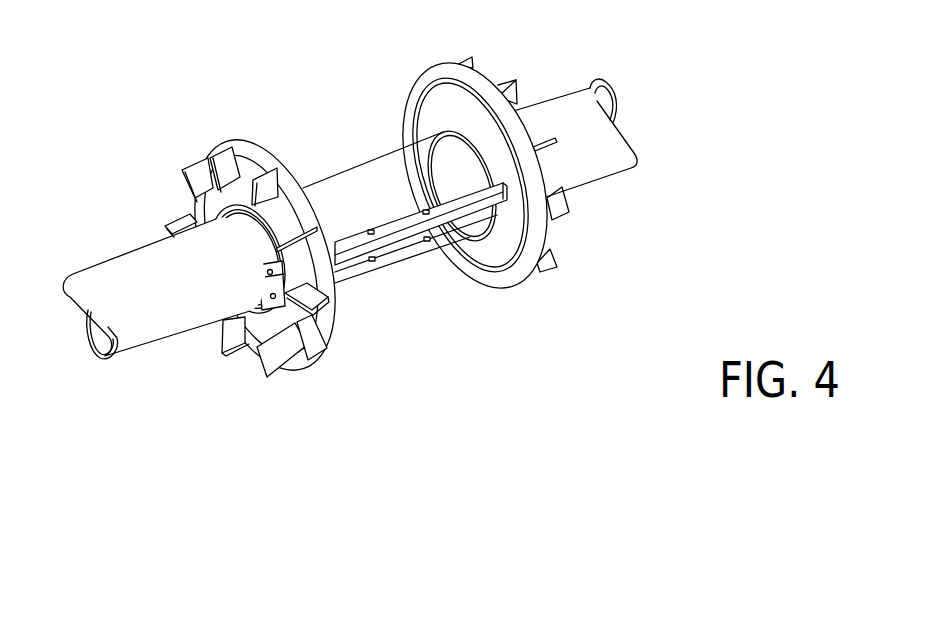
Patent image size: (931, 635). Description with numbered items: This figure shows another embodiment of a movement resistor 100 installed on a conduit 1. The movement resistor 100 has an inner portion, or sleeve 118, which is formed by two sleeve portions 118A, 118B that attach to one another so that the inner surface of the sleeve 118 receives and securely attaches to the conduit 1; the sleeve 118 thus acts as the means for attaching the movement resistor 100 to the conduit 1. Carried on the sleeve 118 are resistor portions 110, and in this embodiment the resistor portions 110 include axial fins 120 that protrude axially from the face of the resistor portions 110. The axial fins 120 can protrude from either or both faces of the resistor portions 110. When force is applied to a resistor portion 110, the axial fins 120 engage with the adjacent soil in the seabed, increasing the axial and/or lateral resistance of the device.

The conduit 1 is at (168, 303).
The movement resistor 100 is at (257, 97).
The resistor portions 110 is at (233, 141).
The sleeve 118 is at (337, 135).
The sleeve portion 118A is at (377, 190).
The sleeve portion 118B is at (399, 264).
The axial fins 120 is at (166, 169).